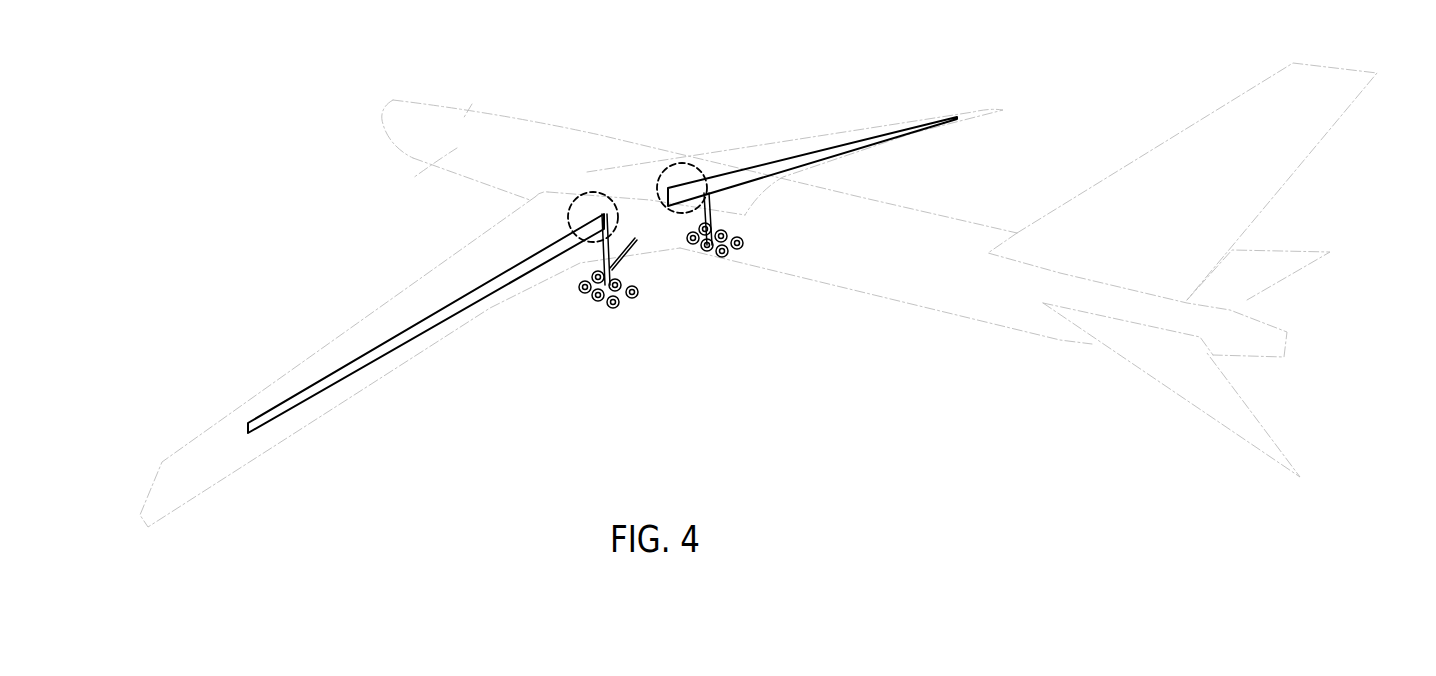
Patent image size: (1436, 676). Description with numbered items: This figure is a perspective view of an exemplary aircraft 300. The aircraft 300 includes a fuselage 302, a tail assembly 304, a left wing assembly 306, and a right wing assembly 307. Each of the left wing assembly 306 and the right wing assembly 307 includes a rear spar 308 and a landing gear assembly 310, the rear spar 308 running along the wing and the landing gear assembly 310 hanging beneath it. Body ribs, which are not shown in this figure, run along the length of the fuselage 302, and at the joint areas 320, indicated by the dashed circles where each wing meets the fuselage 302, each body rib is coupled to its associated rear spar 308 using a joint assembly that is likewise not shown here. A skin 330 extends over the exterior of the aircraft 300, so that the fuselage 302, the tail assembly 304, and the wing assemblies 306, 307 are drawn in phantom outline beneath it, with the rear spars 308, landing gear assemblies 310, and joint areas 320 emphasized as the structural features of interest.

The aircraft 300 is at (771, 64).
The fuselage 302 is at (471, 104).
The tail assembly 304 is at (1287, 153).
The left wing assembly 306 is at (407, 303).
The right wing assembly 307 is at (759, 141).
The rear spar 308 is at (443, 313).
The landing gear assembly 310 is at (612, 302).
The joint area 320 is at (587, 193).
The skin 330 is at (425, 168).